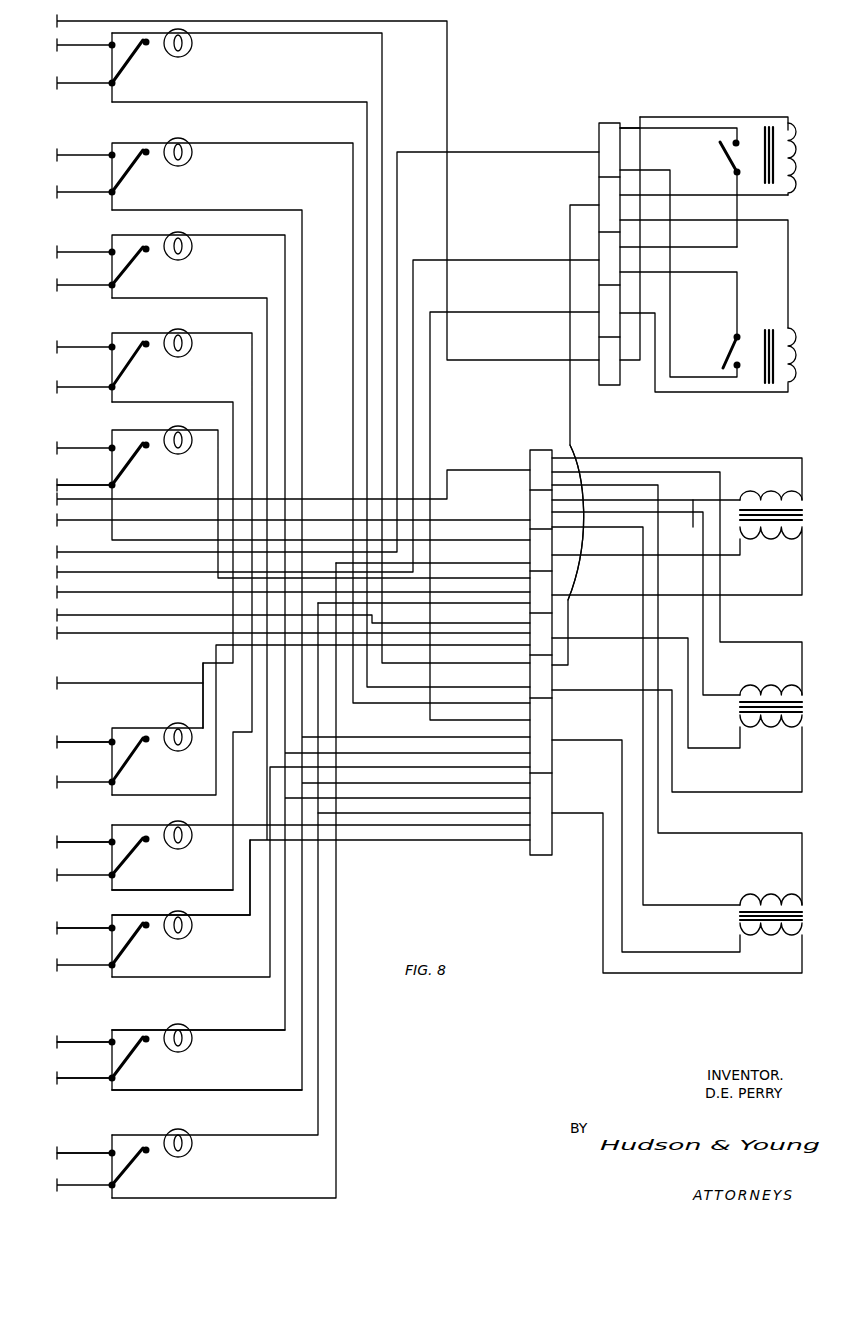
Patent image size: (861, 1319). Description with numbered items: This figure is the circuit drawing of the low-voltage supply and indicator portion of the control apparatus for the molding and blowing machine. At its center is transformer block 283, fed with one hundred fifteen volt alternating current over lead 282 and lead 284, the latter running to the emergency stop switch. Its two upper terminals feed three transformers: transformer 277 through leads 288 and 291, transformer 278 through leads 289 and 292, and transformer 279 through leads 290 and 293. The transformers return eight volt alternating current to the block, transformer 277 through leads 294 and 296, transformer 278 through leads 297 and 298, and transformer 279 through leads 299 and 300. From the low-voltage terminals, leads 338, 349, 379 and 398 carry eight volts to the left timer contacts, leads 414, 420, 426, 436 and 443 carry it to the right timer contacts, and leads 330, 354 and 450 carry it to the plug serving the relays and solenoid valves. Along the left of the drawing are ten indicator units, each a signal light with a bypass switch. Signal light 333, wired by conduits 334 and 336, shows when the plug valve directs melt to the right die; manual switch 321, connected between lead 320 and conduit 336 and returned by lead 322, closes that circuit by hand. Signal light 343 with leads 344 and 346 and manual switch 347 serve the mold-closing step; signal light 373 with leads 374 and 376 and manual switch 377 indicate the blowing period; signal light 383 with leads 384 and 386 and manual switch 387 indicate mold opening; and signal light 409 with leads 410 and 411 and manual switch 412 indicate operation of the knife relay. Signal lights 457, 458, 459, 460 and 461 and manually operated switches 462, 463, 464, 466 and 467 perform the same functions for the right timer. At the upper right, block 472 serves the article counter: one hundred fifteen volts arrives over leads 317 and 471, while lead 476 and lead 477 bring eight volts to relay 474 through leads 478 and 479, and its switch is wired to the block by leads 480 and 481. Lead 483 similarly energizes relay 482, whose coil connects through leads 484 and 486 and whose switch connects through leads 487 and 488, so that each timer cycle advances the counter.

The signal light 461 is at (192, 46).
The manually operated switch 467 is at (131, 62).
The lead 443 is at (312, 102).
The signal light 460 is at (187, 161).
The manually operated switch 466 is at (129, 170).
The lead 420 is at (257, 209).
The signal light 459 is at (187, 256).
The manually operated switch 464 is at (129, 267).
The lead 436 is at (218, 298).
The signal light 458 is at (172, 330).
The manually operated switch 463 is at (132, 362).
The lead 414 is at (136, 402).
The signal light 457 is at (180, 426).
The manually operated switch 462 is at (134, 455).
The lead 426 is at (110, 480).
The lead 282 is at (144, 500).
The lead 284 is at (132, 522).
The lead 317 is at (98, 551).
The lead 471 is at (130, 572).
The lead 354 is at (130, 592).
The lead 483 is at (128, 615).
The lead 330 is at (182, 633).
The lead 450 is at (166, 683).
The lead 410 is at (202, 695).
The lead 411 is at (124, 727).
The signal light 409 is at (173, 725).
The manual switch 412 is at (129, 765).
The lead 398 is at (169, 795).
The lead 346 is at (122, 825).
The signal light 343 is at (178, 820).
The lead 344 is at (190, 825).
The manual switch 347 is at (131, 857).
The lead 338 is at (182, 890).
The lead 386 is at (84, 927).
The signal light 383 is at (178, 913).
The lead 384 is at (246, 923).
The manual switch 387 is at (131, 948).
The lead 379 is at (206, 977).
The conduit 336 is at (115, 1030).
The signal light 333 is at (178, 1024).
The conduit 334 is at (235, 1030).
The manual switch 321 is at (129, 1060).
The lead 322 is at (274, 1090).
The lead 320 is at (88, 1079).
The lead 376 is at (110, 1144).
The signal light 373 is at (184, 1133).
The lead 374 is at (241, 1136).
The manual switch 377 is at (132, 1166).
The lead 349 is at (233, 1198).
The block 472 is at (606, 122).
The lead 478 is at (676, 117).
The relay 474 is at (797, 133).
The lead 481 is at (690, 131).
The lead 476 is at (448, 177).
The lead 479 is at (719, 202).
The lead 486 is at (785, 229).
The lead 477 is at (570, 219).
The lead 480 is at (737, 232).
The lead 488 is at (670, 303).
The lead 487 is at (725, 332).
The relay 482 is at (798, 345).
The lead 484 is at (735, 392).
The transformer block 283 is at (532, 452).
The lead 288 is at (586, 458).
The lead 289 is at (657, 458).
The transformer 277 is at (779, 496).
The lead 290 is at (661, 496).
The lead 291 is at (693, 519).
The lead 292 is at (700, 536).
The lead 293 is at (625, 537).
The lead 294 is at (784, 592).
The lead 296 is at (625, 564).
The transformer 278 is at (772, 691).
The lead 298 is at (626, 653).
The lead 297 is at (616, 696).
The lead 300 is at (601, 741).
The lead 299 is at (603, 846).
The transformer 279 is at (740, 907).